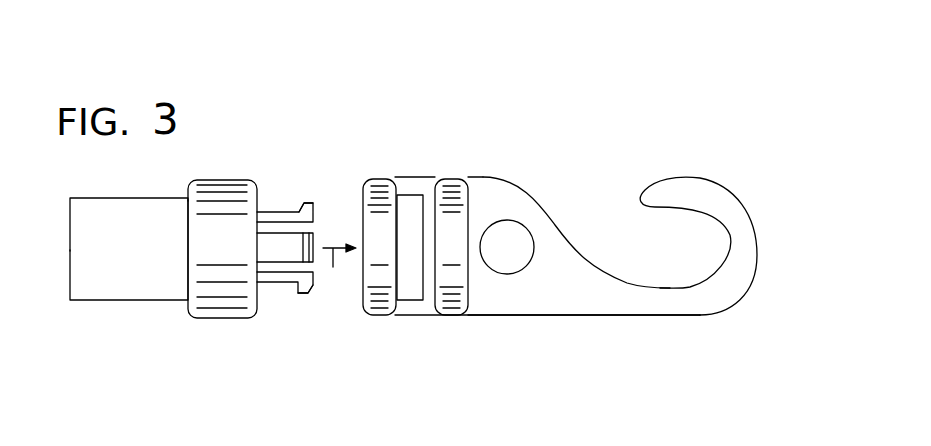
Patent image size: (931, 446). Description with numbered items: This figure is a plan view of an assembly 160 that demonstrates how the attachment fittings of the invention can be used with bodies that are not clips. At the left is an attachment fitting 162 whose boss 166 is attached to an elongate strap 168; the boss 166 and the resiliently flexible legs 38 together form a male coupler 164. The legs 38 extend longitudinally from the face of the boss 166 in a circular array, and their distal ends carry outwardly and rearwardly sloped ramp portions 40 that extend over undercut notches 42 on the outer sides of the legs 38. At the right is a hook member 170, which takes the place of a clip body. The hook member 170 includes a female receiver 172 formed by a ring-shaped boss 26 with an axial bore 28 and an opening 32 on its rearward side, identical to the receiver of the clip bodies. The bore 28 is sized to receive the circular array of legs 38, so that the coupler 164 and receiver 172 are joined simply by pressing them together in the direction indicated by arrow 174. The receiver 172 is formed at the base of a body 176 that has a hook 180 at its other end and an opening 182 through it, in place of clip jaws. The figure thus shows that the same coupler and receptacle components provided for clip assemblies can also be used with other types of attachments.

The assembly 160 is at (399, 102).
The attachment fitting 162 is at (141, 316).
The male coupler 164 is at (221, 170).
The boss 166 is at (212, 318).
The elongate strap 168 is at (90, 290).
The resiliently flexible legs 38 is at (272, 245).
The ramp portions 40 is at (312, 294).
The undercut notches 42 is at (300, 204).
The arrow 174 is at (341, 268).
The axial bore 28 is at (373, 220).
The ring-shaped boss 26 is at (377, 317).
The opening 32 is at (410, 285).
The female receiver 172 is at (378, 170).
The hook member 170 is at (495, 350).
The body 176 is at (573, 306).
The opening 182 is at (510, 226).
The hook 180 is at (757, 227).